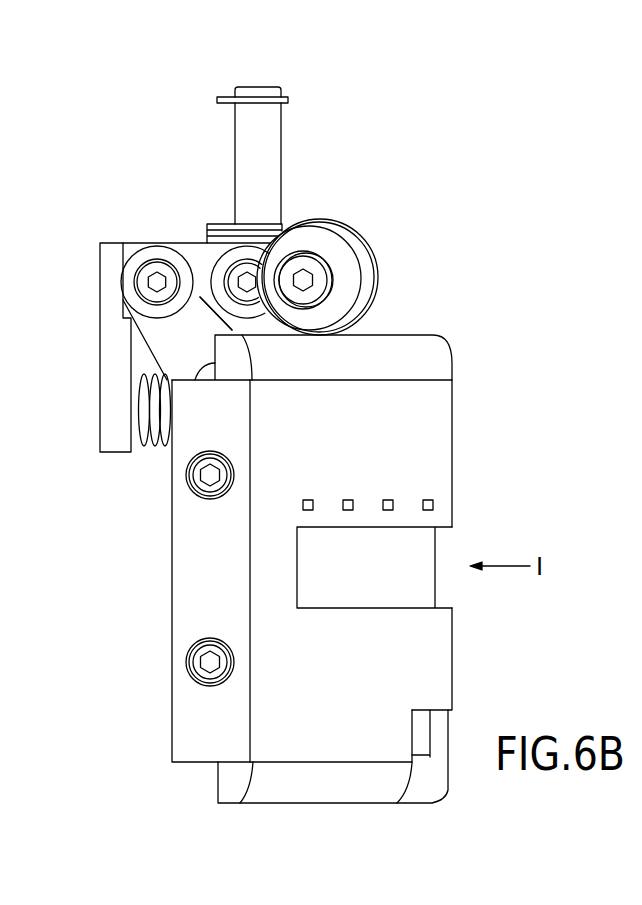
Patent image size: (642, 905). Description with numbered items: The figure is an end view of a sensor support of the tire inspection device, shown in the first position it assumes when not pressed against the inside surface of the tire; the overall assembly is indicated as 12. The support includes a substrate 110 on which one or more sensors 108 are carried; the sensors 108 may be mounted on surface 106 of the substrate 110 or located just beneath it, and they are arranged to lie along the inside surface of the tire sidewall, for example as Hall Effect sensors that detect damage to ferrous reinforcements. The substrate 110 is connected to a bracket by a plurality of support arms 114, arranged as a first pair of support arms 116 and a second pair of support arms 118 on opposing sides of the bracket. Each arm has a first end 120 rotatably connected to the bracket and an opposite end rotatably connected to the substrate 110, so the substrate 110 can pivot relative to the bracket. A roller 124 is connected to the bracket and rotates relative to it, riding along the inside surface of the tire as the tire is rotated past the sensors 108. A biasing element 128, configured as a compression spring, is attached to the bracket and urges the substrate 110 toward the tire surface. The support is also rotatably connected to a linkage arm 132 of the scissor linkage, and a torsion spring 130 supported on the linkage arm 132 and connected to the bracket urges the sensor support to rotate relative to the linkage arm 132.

The roller guide assembly 12 is at (127, 241).
The surface 106 is at (462, 450).
The sensors 108 is at (308, 500).
The substrate 110 is at (442, 390).
The support arms 114 is at (188, 217).
The first pair of support arms 116 is at (163, 331).
The second pair of support arms 118 is at (238, 325).
The first end 120 is at (205, 253).
The roller 124 is at (345, 248).
The biasing element 128 is at (148, 452).
The torsion spring 130 is at (218, 222).
The linkage arm 132 is at (270, 127).